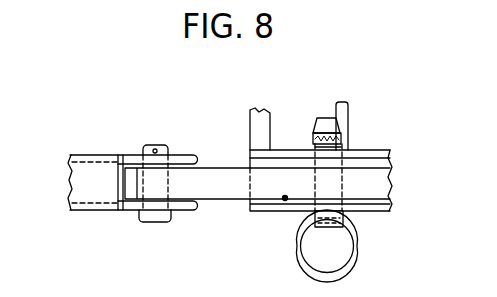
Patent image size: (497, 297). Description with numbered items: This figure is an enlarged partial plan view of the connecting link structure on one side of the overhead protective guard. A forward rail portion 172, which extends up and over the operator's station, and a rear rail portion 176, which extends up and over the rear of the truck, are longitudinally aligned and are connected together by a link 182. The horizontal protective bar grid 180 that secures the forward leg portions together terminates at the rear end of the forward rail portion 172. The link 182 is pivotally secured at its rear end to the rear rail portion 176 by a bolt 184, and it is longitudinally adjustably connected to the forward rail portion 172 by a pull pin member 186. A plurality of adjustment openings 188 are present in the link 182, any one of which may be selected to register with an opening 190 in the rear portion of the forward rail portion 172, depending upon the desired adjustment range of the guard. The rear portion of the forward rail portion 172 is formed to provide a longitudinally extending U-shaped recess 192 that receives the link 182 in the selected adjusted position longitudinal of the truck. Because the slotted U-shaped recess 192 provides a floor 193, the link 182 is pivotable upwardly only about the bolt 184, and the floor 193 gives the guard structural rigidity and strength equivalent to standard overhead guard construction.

The forward rail portion 172 is at (383, 149).
The rear rail portion 176 is at (80, 158).
The horizontal protective bar grid 180 is at (270, 114).
The link 182 is at (217, 168).
The bolt 184 is at (155, 146).
The pull pin member 186 is at (333, 228).
The adjustment openings 188 is at (345, 189).
The opening 190 is at (358, 143).
The U-shaped recess 192 is at (285, 201).
The floor 193 is at (248, 189).